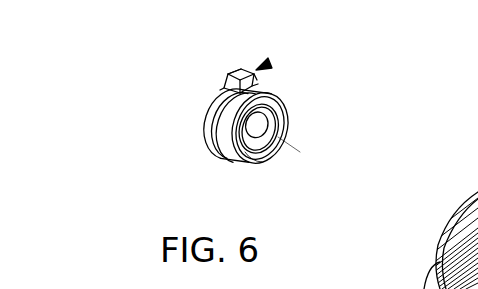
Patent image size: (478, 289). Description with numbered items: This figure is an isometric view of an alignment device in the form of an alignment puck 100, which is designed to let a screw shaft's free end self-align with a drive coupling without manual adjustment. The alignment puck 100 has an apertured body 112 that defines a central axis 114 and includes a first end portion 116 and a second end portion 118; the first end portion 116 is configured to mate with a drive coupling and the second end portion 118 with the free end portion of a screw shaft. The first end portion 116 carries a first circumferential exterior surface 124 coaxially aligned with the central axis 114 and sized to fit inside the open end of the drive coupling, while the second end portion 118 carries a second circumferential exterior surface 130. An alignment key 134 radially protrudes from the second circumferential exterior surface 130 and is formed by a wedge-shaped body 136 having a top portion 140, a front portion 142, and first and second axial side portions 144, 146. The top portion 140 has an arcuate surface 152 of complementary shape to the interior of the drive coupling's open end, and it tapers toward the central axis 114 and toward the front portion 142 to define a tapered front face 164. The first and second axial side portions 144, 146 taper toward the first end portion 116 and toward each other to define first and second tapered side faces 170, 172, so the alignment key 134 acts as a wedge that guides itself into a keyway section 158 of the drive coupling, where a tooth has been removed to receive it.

The alignment puck 100 is at (208, 106).
The apertured body 112 is at (276, 128).
The central axis 114 is at (290, 143).
The first end portion 116 is at (257, 158).
The second end portion 118 is at (204, 115).
The first circumferential exterior surface 124 is at (230, 157).
The second circumferential exterior surface 130 is at (210, 155).
The alignment key 134 is at (266, 64).
The wedge-shaped body 136 is at (233, 80).
The top portion 140 is at (226, 44).
The arcuate surface 152 is at (242, 68).
The front portion 142 is at (353, 84).
The tapered front face 164 is at (258, 84).
The first axial side portion 144 is at (333, 64).
The first tapered side face 170 is at (257, 81).
The second axial side portion 146 is at (143, 66).
The second tapered side face 172 is at (222, 90).
The keyway section 158 is at (470, 212).